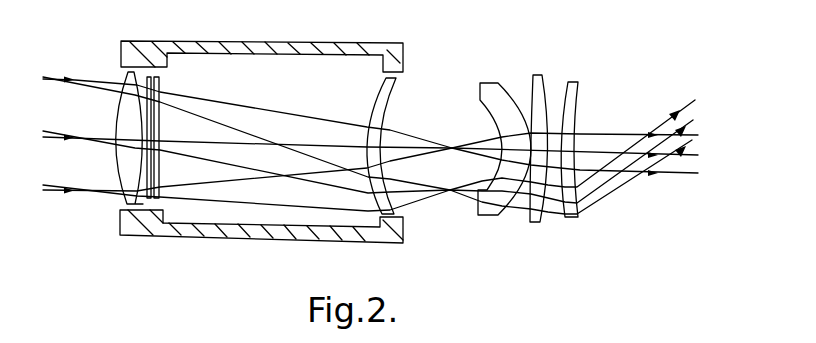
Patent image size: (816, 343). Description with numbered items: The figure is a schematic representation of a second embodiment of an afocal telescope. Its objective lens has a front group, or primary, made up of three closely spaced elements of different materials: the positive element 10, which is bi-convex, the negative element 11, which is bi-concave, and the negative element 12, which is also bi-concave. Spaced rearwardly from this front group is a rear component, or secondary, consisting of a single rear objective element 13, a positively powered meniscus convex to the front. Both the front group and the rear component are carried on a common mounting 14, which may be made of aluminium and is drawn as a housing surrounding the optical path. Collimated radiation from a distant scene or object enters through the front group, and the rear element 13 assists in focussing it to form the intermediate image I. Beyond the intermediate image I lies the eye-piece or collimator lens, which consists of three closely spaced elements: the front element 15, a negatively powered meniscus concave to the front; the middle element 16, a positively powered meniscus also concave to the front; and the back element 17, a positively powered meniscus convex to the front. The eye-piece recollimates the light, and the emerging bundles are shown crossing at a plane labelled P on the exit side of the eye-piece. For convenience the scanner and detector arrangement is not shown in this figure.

The positive element 10 is at (118, 176).
The negative element 11 is at (152, 77).
The negative element 12 is at (159, 169).
The rear objective element 13 is at (394, 104).
The common mounting 14 is at (267, 241).
The front element of the eye-piece 15 is at (493, 81).
The middle element of the eye-piece 16 is at (537, 75).
The back element of the eye-piece 17 is at (581, 82).
The intermediate image I is at (452, 194).
The exit pupil P is at (650, 177).